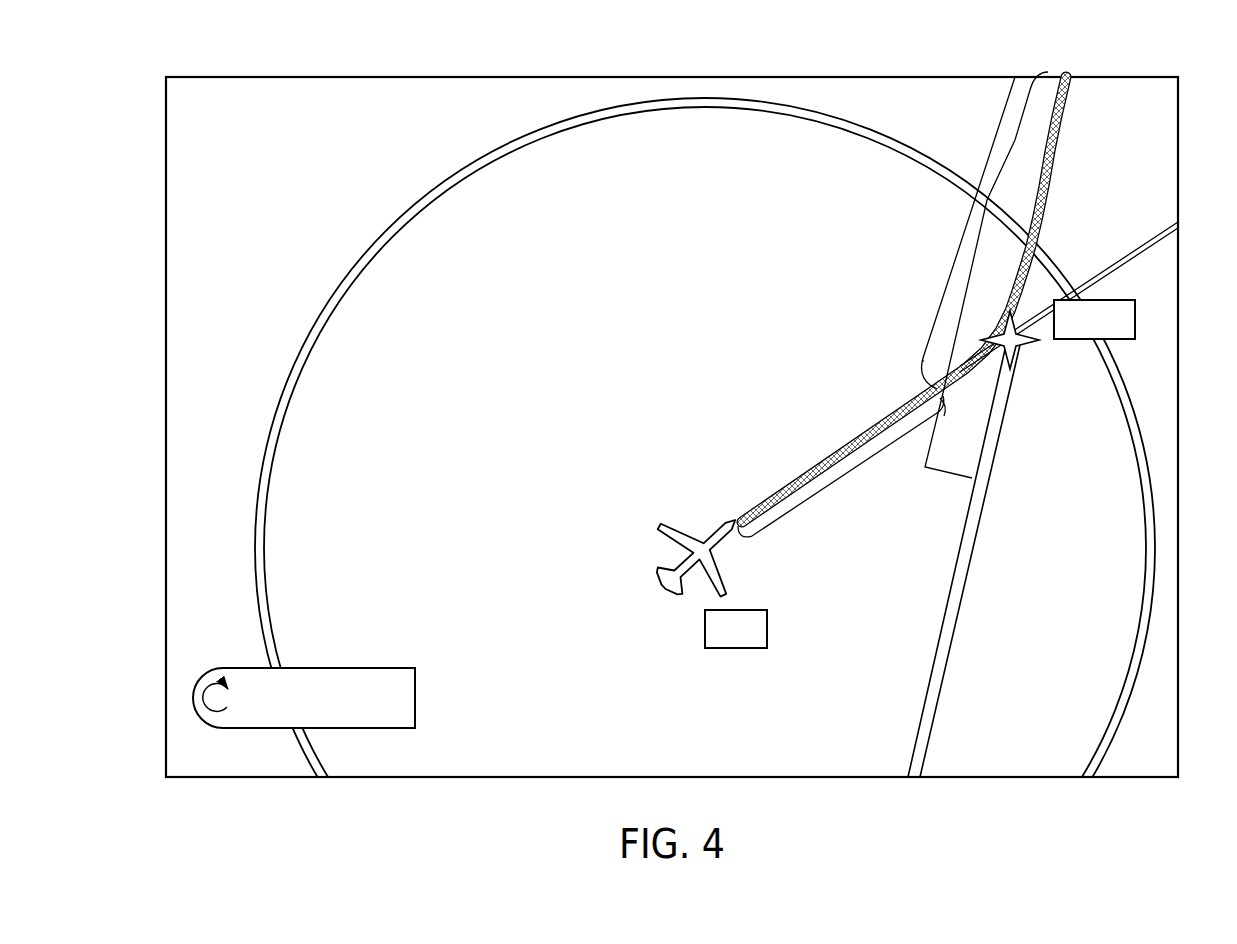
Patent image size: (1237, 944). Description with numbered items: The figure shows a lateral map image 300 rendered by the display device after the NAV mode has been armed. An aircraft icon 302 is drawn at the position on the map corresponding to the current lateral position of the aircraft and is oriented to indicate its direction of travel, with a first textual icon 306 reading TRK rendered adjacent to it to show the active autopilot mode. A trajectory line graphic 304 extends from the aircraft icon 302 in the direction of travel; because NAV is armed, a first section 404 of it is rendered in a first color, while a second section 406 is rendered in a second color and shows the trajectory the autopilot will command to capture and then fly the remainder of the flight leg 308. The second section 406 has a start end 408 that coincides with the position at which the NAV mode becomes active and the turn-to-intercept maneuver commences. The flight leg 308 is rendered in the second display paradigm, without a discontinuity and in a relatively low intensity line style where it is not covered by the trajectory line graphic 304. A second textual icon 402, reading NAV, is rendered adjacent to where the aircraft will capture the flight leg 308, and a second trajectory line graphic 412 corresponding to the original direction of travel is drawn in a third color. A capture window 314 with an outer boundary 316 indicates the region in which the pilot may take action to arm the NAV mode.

The image 300 is at (672, 491).
The aircraft icon 302 is at (672, 510).
The trajectory line graphic 304 is at (904, 299).
The first textual icon 306 is at (705, 632).
The flight leg 308 is at (998, 561).
The capture window 314 is at (893, 290).
The outer boundary 316 is at (997, 138).
The second textual icon 402 is at (1073, 340).
The first section 404 is at (908, 424).
The second section 406 is at (977, 236).
The start end 408 is at (924, 391).
The second trajectory line graphic 412 is at (1151, 236).